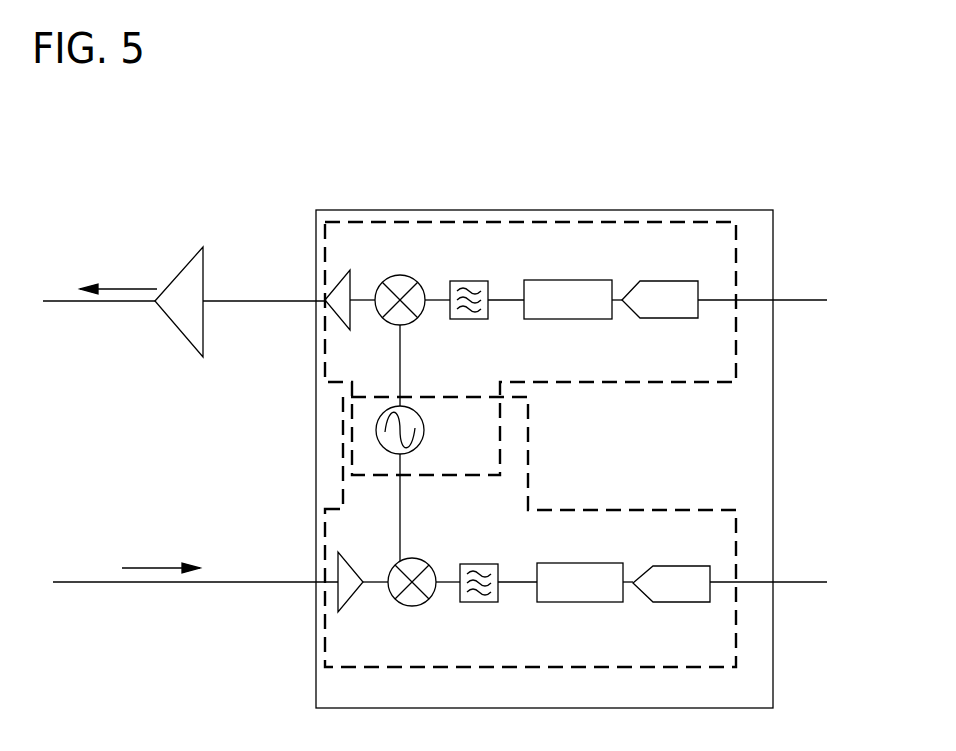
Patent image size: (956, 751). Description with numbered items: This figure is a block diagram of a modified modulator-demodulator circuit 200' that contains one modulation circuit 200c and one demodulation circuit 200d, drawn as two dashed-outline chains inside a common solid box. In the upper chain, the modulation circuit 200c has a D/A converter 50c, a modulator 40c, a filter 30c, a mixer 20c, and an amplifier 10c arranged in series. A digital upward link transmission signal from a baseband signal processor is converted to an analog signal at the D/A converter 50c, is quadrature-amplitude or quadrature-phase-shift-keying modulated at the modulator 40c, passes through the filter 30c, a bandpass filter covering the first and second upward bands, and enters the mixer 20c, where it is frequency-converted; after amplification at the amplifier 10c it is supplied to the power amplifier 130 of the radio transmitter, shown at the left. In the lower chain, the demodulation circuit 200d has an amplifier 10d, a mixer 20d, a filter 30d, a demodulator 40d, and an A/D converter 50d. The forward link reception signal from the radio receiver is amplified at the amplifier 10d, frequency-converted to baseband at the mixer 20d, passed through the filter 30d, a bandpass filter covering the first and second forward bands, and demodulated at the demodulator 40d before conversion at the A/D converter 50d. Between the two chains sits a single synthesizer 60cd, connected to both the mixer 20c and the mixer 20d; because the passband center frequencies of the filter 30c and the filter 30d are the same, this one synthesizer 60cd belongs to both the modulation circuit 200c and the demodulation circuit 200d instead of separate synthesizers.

The power amplifier 130 is at (178, 277).
The modulator-demodulator circuit 200' is at (591, 438).
The modulation circuit 200c is at (737, 280).
The demodulation circuit 200d is at (735, 574).
The amplifier 10c is at (351, 284).
The mixer 20c is at (412, 287).
The filter 30c is at (485, 284).
The modulator 40c is at (573, 284).
The D/A converter 50c is at (724, 283).
The synthesizer 60cd is at (432, 443).
The amplifier 10d is at (220, 600).
The mixer 20d is at (424, 597).
The filter 30d is at (497, 600).
The demodulator 40d is at (585, 598).
The A/D converter 50d is at (730, 601).